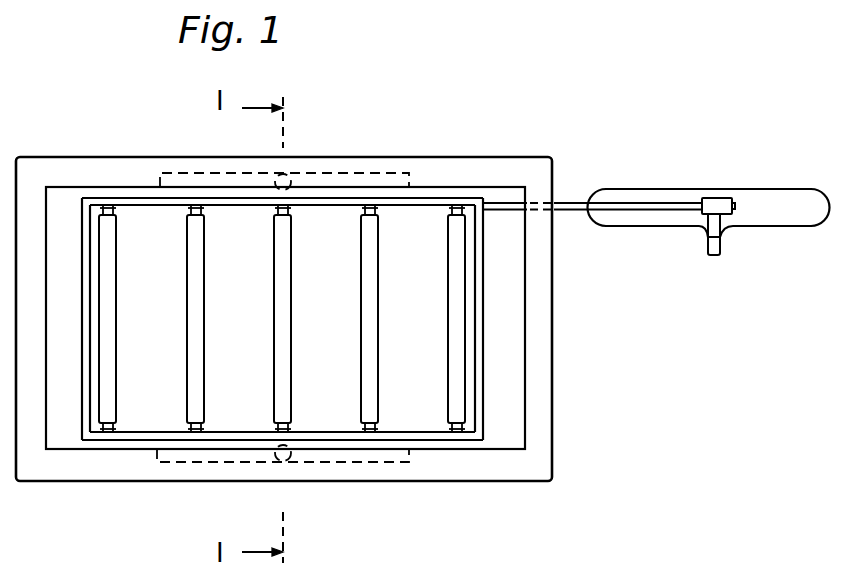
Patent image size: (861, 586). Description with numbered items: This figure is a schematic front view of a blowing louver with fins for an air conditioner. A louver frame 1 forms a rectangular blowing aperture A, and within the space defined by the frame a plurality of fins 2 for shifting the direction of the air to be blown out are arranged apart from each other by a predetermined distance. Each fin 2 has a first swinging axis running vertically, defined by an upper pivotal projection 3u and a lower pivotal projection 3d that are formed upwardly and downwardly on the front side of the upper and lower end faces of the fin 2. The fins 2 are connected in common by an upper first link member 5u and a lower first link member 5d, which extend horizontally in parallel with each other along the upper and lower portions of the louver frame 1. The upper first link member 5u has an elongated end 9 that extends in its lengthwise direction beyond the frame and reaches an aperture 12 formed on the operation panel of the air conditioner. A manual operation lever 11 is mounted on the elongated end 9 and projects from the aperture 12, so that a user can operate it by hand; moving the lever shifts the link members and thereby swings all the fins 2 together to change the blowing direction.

The louver frame 1 is at (78, 156).
The fin 2 is at (115, 387).
The upper pivotal projection 3u is at (113, 212).
The lower pivotal projection 3d is at (93, 440).
The upper first link member 5u is at (420, 204).
The lower first link member 5d is at (357, 438).
The elongated end 9 is at (655, 200).
The manual operation lever 11 is at (723, 243).
The aperture 12 is at (773, 195).
The blowing aperture A is at (524, 347).